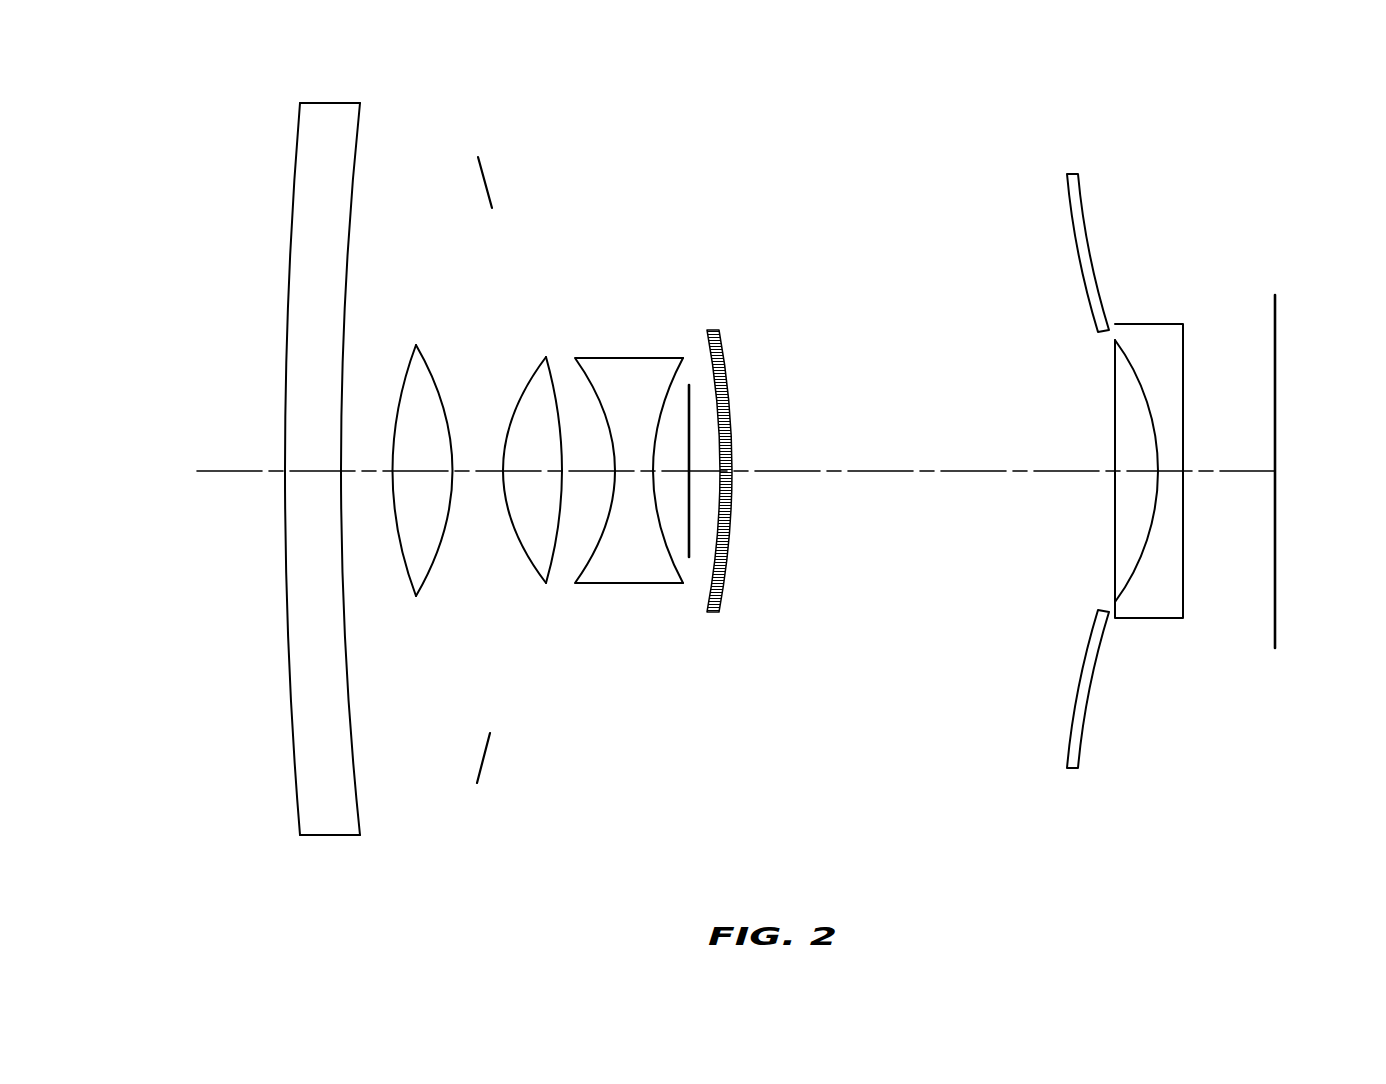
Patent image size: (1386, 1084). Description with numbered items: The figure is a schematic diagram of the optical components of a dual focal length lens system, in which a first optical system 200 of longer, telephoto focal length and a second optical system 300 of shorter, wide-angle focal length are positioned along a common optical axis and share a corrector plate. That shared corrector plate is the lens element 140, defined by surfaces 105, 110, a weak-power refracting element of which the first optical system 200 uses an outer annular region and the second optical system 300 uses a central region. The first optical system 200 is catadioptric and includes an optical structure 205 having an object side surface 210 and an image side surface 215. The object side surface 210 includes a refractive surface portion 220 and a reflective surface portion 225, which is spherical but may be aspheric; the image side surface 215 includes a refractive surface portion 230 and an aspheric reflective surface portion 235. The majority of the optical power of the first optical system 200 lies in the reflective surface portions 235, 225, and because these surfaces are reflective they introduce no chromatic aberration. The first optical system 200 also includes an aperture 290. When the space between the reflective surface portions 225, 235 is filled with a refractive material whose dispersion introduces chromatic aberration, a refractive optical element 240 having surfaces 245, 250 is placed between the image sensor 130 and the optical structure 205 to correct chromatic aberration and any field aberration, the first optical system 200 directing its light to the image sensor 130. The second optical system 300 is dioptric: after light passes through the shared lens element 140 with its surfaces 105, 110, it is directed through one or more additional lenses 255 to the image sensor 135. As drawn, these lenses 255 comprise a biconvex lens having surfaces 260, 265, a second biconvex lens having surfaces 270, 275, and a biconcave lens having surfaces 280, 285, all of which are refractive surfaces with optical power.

The first optical system 200 is at (890, 163).
The surface 105 is at (298, 141).
The surface 110 is at (358, 141).
The lens element 140 is at (325, 113).
The refractive surface portion 220 is at (328, 838).
The object side surface 210 is at (267, 778).
The second optical system 300 is at (437, 730).
The additional lenses 255 is at (407, 543).
The surface 260 is at (405, 373).
The surface 265 is at (433, 372).
The surface 270 is at (545, 572).
The surface 275 is at (552, 572).
The surface 280 is at (587, 380).
The surface 285 is at (678, 375).
The image sensor 135 is at (687, 533).
The reflective surface portion 225 is at (720, 590).
The aperture 290 is at (487, 750).
The optical structure 205 is at (987, 728).
The image side surface 215 is at (1122, 163).
The reflective surface portion 235 is at (1095, 288).
The refractive optical element 240 is at (1165, 330).
The refractive surface portion 230 is at (1132, 515).
The surface 245 is at (1133, 575).
The surface 250 is at (1183, 577).
The image sensor 130 is at (1275, 620).